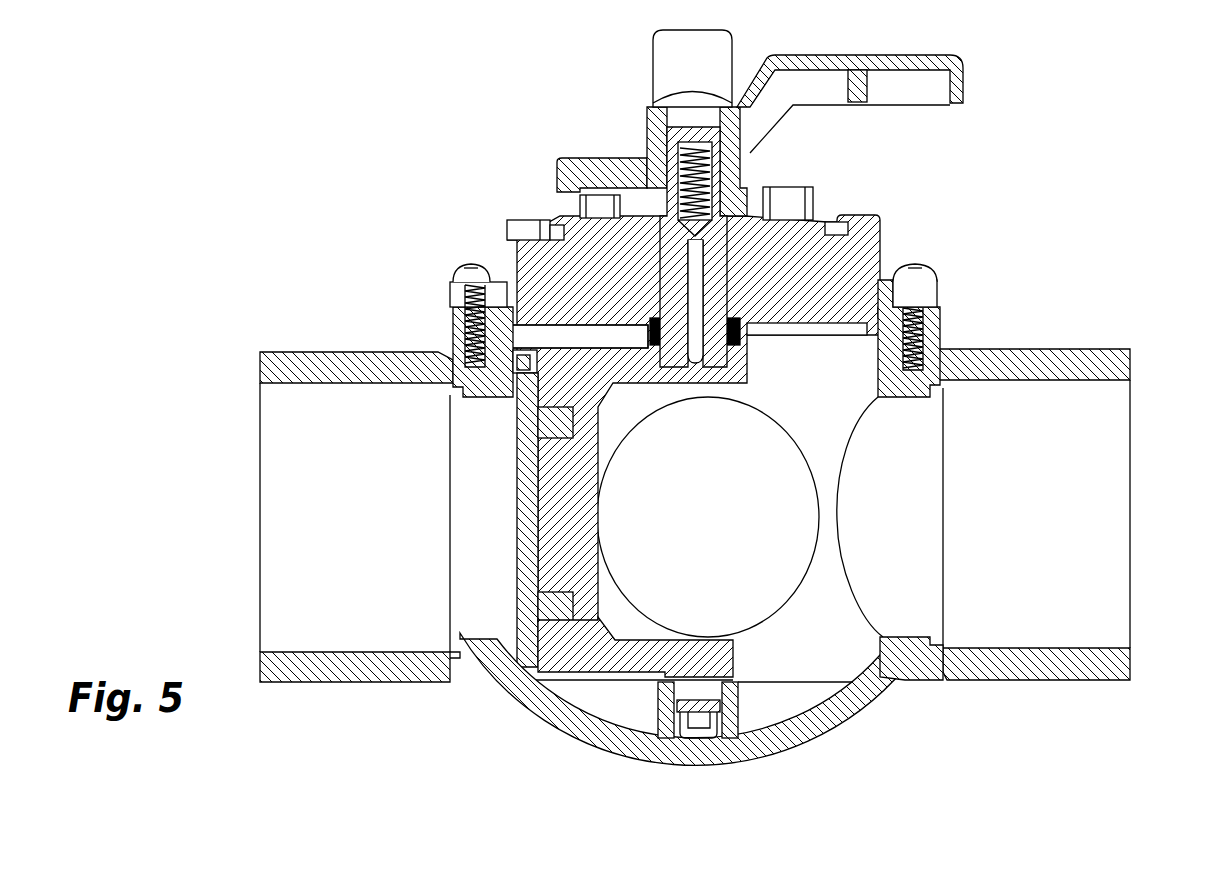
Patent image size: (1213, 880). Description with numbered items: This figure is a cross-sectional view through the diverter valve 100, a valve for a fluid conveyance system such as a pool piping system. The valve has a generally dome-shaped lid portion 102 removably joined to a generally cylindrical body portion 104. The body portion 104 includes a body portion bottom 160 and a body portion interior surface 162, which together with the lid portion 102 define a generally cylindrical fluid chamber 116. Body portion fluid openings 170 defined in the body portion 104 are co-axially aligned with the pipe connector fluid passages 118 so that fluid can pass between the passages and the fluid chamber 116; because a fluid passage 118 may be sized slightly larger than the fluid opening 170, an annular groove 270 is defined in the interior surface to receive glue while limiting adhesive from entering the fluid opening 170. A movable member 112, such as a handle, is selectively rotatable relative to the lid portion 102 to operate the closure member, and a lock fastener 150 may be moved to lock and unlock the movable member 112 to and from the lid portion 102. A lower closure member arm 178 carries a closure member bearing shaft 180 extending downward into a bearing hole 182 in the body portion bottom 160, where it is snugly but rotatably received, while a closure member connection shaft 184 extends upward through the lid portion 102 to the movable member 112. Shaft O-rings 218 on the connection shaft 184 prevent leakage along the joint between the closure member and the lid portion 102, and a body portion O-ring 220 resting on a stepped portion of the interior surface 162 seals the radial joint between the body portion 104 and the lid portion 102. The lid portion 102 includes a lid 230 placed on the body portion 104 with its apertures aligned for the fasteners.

The diverter valve 100 is at (1111, 226).
The lid portion 102 is at (820, 217).
The body portion 104 is at (858, 702).
The movable member 112 is at (963, 88).
The fluid chamber 116 is at (830, 420).
The pipe connector fluid passage 118 is at (343, 548).
The lock fastener 150 is at (678, 57).
The body portion bottom 160 is at (846, 726).
The body portion interior surface 162 is at (558, 313).
The body portion fluid opening 170 is at (483, 595).
The lower closure member arm 178 is at (607, 663).
The closure member bearing shaft 180 is at (680, 745).
The bearing hole 182 is at (727, 728).
The closure member connection shaft 184 is at (750, 187).
The shaft O-ring 218 is at (780, 333).
The body portion O-ring 220 is at (927, 317).
The lid 230 is at (525, 217).
The annular groove 270 is at (462, 348).